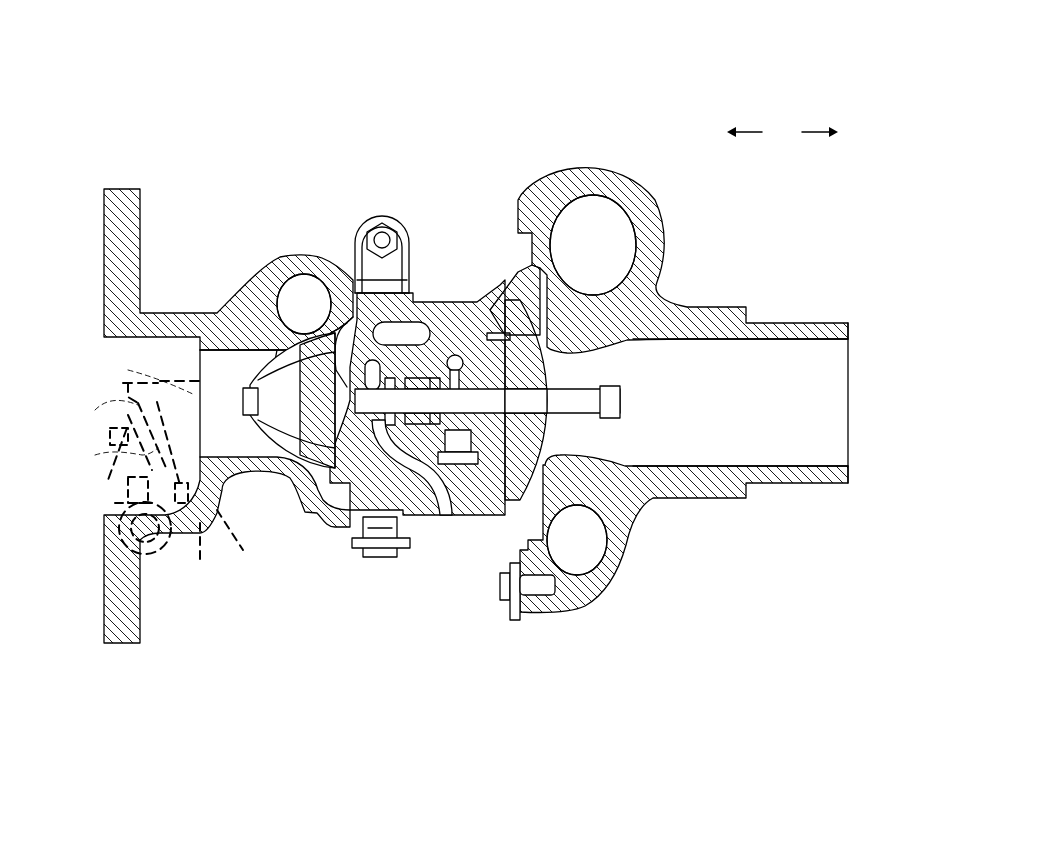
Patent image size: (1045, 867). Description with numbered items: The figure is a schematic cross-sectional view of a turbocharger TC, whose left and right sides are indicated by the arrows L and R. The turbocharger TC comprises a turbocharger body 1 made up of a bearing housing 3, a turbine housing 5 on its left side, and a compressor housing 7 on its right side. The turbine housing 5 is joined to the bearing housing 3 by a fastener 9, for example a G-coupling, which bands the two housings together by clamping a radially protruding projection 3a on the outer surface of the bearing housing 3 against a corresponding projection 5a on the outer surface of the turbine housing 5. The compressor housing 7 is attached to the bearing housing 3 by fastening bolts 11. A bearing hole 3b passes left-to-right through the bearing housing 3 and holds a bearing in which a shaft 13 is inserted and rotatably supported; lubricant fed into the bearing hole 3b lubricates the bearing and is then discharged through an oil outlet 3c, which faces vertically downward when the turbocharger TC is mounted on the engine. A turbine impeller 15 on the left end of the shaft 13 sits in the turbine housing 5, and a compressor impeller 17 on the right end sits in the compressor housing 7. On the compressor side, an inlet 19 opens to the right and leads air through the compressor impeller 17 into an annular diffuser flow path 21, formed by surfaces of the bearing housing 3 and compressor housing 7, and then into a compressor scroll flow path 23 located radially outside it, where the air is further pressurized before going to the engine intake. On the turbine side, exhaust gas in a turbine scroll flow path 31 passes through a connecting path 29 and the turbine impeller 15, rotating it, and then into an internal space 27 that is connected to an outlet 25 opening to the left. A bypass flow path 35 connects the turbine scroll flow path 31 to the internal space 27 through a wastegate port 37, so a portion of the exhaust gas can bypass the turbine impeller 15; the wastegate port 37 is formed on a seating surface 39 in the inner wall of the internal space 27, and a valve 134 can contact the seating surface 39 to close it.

The turbocharger TC is at (236, 48).
The turbocharger body 1 is at (291, 106).
The bearing housing 3 is at (442, 300).
The projection 3a is at (401, 262).
The bearing hole 3b is at (370, 420).
The oil outlet 3c is at (440, 516).
The turbine housing 5 is at (172, 313).
The projection 5a is at (358, 262).
The compressor housing 7 is at (596, 168).
The fastener 9 is at (377, 191).
The fastening bolts 11 is at (505, 612).
The shaft 13 is at (415, 425).
The turbine impeller 15 is at (277, 370).
The compressor impeller 17 is at (640, 409).
The inlet 19 is at (850, 437).
The diffuser flow path 21 is at (540, 292).
The compressor scroll flow path 23 is at (600, 530).
The outlet 25 is at (104, 397).
The internal space 27 is at (164, 366).
The connecting path 29 is at (320, 327).
The turbine scroll flow path 31 is at (297, 290).
The bypass flow path 35 is at (165, 395).
The wastegate port 37 is at (107, 443).
The seating surface 39 is at (143, 407).
The valve 134 is at (117, 503).